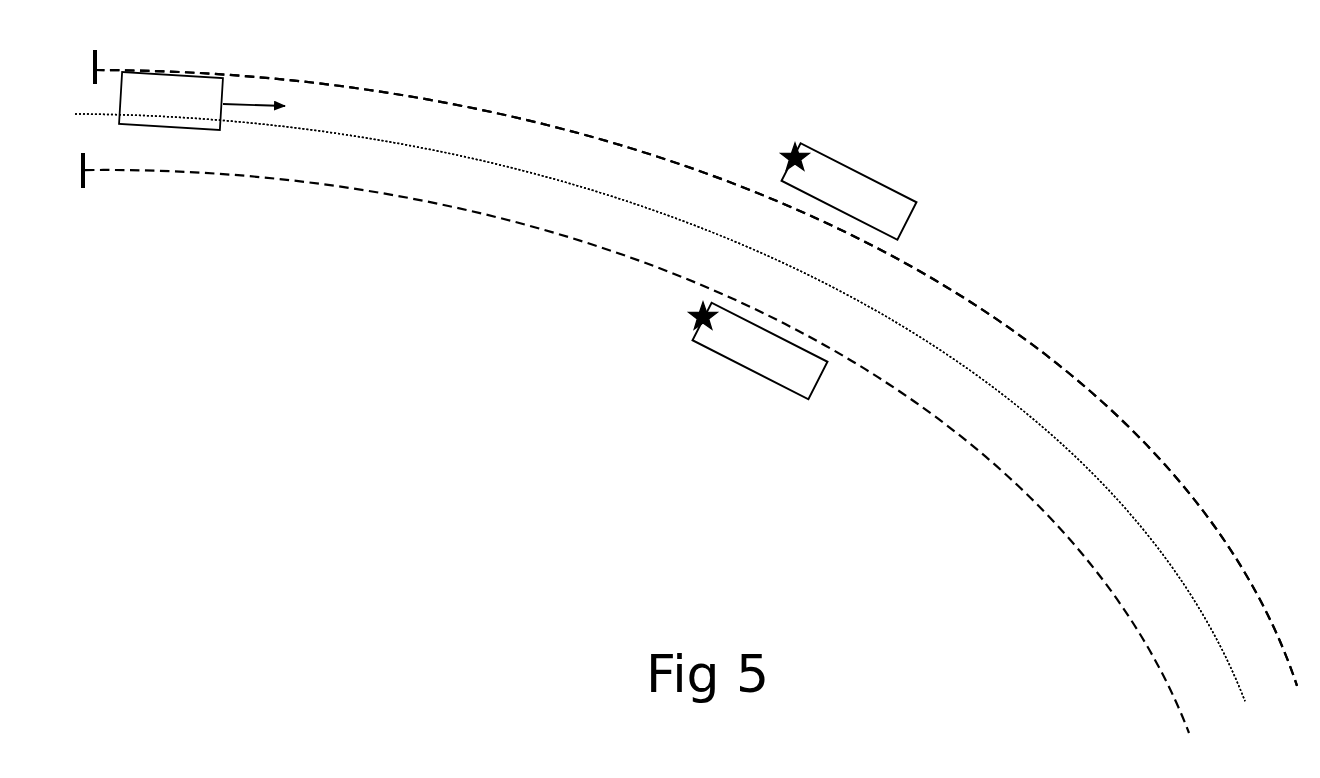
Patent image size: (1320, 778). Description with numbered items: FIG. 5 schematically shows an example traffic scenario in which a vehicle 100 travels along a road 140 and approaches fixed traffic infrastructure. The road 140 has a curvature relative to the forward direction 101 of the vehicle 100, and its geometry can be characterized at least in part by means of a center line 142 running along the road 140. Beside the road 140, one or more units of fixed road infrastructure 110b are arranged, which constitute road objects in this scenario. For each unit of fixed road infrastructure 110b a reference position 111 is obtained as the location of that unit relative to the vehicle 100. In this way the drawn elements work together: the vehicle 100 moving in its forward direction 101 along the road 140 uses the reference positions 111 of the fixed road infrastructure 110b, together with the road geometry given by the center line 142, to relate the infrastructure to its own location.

The vehicle 100 is at (202, 101).
The forward direction 101 is at (252, 78).
The fixed road infrastructure 110b is at (805, 271).
The reference position 111 is at (790, 138).
The road 140 is at (997, 312).
The center line 142 is at (1047, 422).